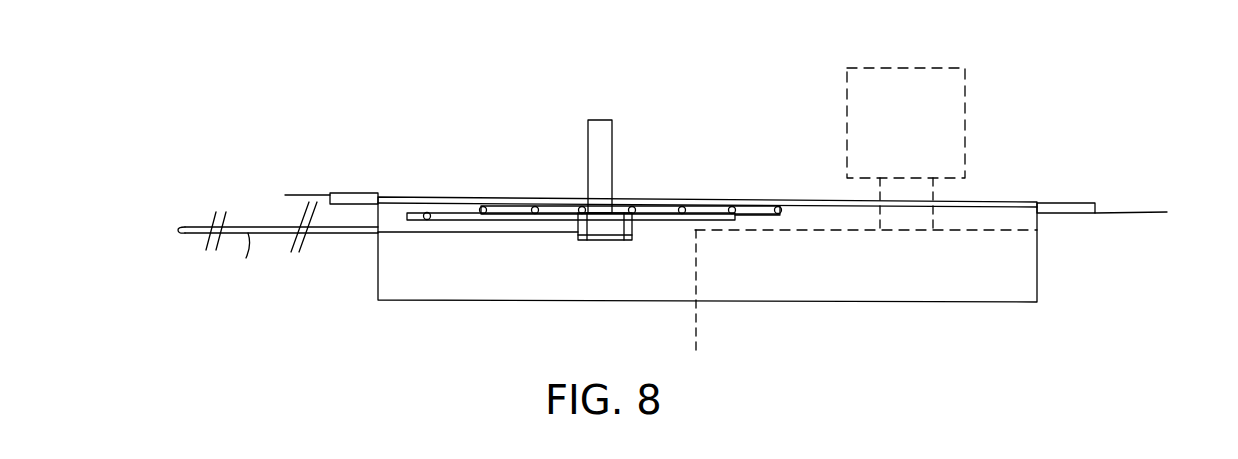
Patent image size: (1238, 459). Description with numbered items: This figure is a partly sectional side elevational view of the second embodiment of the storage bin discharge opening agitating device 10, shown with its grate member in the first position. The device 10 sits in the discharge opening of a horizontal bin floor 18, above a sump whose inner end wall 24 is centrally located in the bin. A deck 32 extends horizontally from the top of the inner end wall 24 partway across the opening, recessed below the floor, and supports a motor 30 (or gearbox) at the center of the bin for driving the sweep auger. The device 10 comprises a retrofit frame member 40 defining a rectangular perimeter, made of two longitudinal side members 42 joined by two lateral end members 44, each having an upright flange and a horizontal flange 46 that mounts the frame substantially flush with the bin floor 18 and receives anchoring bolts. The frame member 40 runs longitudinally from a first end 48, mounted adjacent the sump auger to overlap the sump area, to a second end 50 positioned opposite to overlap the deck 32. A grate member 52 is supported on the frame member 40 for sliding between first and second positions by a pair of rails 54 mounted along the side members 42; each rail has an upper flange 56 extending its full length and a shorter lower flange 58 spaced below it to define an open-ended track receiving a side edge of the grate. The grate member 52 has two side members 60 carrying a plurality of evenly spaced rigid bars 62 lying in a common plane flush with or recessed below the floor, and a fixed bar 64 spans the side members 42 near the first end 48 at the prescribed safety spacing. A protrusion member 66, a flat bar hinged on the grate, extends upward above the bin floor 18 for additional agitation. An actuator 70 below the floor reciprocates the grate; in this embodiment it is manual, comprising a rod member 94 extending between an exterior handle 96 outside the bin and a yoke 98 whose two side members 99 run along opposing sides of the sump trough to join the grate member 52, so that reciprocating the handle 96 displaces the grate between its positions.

The agitating device 10 is at (288, 147).
The bin floor 18 is at (297, 194).
The inner end wall 24 is at (695, 332).
The motor 30 is at (911, 67).
The deck 32 is at (990, 220).
The frame member 40 is at (946, 282).
The side members 42 is at (828, 281).
The end members 44 is at (376, 276).
The horizontal flange 46 is at (356, 200).
The first end 48 is at (380, 330).
The second end 50 is at (1030, 348).
The grate member 52 is at (661, 207).
The rails 54 is at (458, 194).
The upper flange 56 is at (422, 197).
The lower flange 58 is at (453, 220).
The side members 60 is at (709, 208).
The rigid bars 62 is at (774, 202).
The fixed bar 64 is at (428, 219).
The protrusion member 66 is at (601, 120).
The actuator 70 is at (290, 259).
The rod member 94 is at (205, 238).
The exterior handle 96 is at (183, 234).
The yoke 98 is at (246, 258).
The side members 99 is at (340, 240).